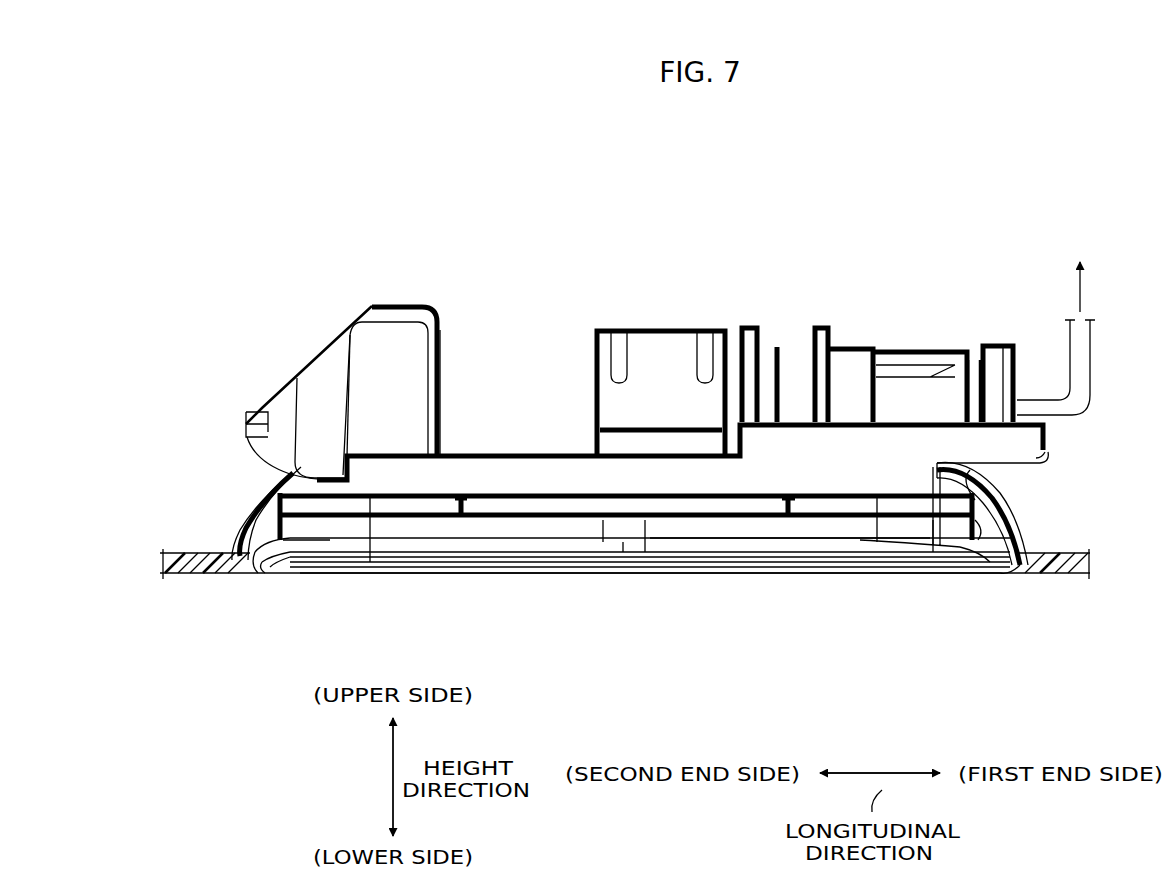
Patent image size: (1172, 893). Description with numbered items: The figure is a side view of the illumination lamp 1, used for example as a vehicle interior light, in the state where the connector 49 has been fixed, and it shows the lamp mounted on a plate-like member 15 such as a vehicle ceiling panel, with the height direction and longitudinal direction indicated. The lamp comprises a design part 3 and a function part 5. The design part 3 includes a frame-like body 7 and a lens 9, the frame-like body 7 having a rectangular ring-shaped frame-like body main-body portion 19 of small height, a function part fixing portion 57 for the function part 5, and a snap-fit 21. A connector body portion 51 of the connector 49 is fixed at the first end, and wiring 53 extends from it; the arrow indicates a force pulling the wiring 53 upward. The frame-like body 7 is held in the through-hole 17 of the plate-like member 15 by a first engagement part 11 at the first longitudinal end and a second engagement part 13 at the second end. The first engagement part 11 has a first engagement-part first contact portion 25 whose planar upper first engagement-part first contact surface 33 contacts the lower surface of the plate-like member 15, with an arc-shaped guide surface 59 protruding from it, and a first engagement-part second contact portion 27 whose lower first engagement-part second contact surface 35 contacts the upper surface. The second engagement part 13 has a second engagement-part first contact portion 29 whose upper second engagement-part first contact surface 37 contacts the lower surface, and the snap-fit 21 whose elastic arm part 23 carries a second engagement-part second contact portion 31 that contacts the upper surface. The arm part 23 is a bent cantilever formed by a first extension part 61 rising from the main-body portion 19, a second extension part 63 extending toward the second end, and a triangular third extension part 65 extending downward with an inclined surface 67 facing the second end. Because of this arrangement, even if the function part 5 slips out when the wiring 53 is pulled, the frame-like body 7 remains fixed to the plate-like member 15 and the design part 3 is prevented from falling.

The illumination lamp 1 is at (920, 197).
The design part 3 is at (688, 580).
The function part 5 is at (901, 347).
The frame-like body 7 is at (843, 535).
The lens 9 is at (756, 577).
The first engagement part 11 is at (1022, 490).
The second engagement part 13 is at (228, 529).
The plate-like member 15 is at (1023, 537).
The through-hole 17 is at (297, 378).
The frame-like body main-body portion 19 is at (545, 462).
The snap-fit 21 is at (430, 300).
The arm part 23 is at (368, 306).
The first engagement-part first contact portion 25 is at (973, 537).
The first engagement-part second contact portion 27 is at (1010, 437).
The second engagement-part first contact portion 29 is at (264, 572).
The second engagement-part second contact portion 31 is at (324, 476).
The first engagement-part first contact surface 33 is at (944, 470).
The first engagement-part second contact surface 35 is at (975, 470).
The second engagement-part first contact surface 37 is at (318, 525).
The connector 49 is at (988, 338).
The connector body portion 51 is at (1003, 343).
The wiring 53 is at (1100, 368).
The function part fixing portion 57 is at (717, 327).
The arc-shaped guide surface 59 is at (262, 495).
The first extension part 61 is at (447, 380).
The second extension part 63 is at (400, 305).
The third extension part 65 is at (283, 372).
The inclined surface 67 is at (262, 405).